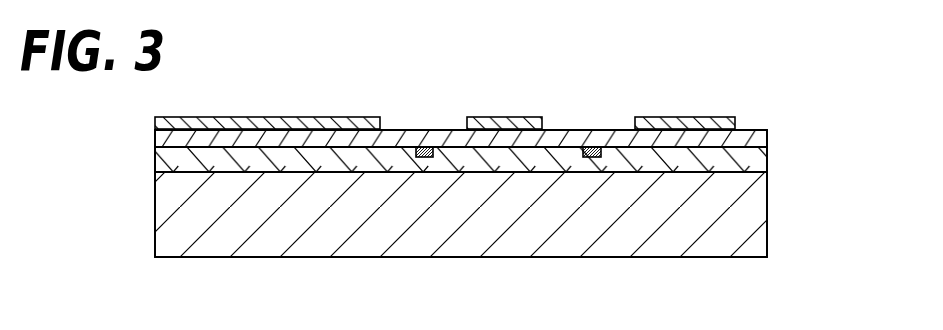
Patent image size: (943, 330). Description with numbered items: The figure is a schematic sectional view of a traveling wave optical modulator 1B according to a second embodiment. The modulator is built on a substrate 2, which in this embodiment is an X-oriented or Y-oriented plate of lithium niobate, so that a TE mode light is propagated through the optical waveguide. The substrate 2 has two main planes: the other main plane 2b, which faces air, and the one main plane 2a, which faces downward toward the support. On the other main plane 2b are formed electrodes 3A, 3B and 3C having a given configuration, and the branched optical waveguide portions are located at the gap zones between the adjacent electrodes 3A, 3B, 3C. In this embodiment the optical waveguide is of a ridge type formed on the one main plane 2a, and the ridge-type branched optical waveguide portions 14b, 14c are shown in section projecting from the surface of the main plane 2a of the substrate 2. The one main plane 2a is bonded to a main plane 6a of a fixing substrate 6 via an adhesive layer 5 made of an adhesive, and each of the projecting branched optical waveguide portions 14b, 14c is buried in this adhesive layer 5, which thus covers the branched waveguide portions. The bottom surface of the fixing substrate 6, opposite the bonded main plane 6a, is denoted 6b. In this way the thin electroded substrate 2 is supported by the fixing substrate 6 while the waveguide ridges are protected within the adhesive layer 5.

The traveling wave optical modulator 1B is at (733, 93).
The substrate 2 is at (768, 132).
The one main plane of the substrate 2a is at (633, 148).
The other main plane of the substrate 2b is at (556, 130).
The electrode 3A is at (682, 117).
The electrode 3B is at (507, 117).
The electrode 3C is at (258, 117).
The adhesive layer 5 is at (768, 162).
The fixing substrate 6 is at (735, 222).
The main plane of the fixing substrate 6a is at (328, 172).
The bottom surface of the fixing substrate 6b is at (468, 257).
The branched optical waveguide portion 14b is at (590, 147).
The branched optical waveguide portion 14c is at (418, 147).